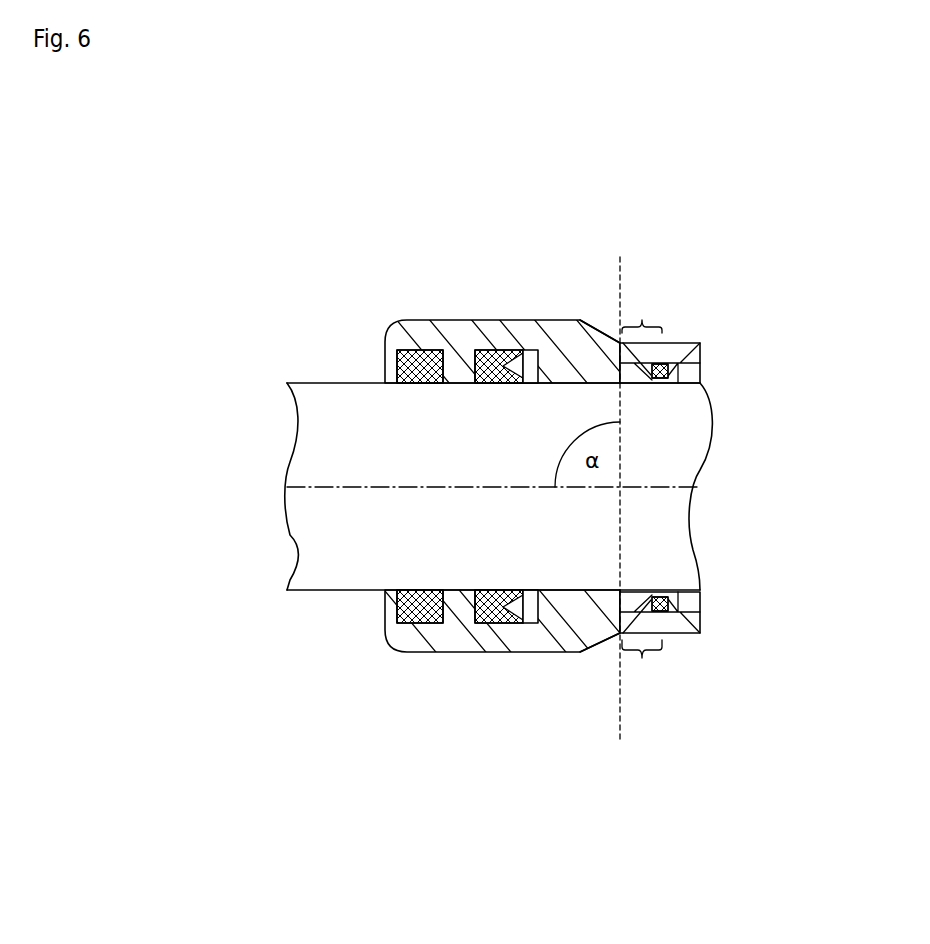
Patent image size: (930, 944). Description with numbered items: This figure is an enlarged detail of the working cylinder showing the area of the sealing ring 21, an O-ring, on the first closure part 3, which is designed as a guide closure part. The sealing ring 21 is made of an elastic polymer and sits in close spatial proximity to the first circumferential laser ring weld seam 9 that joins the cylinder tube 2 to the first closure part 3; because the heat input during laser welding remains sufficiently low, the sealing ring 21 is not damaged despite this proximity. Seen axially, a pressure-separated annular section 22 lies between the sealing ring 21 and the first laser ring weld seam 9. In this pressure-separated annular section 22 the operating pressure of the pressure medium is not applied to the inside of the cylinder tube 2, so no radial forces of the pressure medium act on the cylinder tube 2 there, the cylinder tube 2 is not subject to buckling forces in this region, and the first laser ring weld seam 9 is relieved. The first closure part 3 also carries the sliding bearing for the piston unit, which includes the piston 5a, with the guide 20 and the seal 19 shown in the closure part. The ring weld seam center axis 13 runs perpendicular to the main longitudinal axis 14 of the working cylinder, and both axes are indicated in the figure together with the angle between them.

The cylinder tube 2 is at (688, 623).
The first closure part 3 is at (422, 335).
The piston 5a is at (350, 427).
The first circumferential laser ring weld seam 9 is at (620, 342).
The ring weld seam center axis 13 is at (620, 735).
The main longitudinal axis 14 is at (318, 483).
The seal 19 is at (487, 627).
The guide 20 is at (388, 628).
The sealing ring 21 is at (658, 374).
The pressure-separated annular section 22 is at (642, 485).